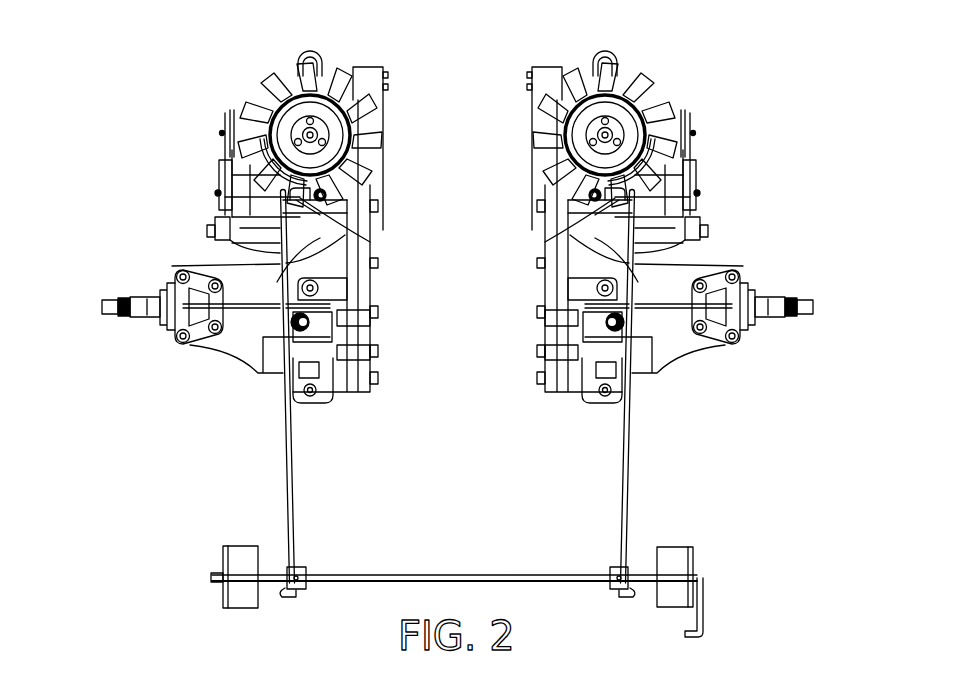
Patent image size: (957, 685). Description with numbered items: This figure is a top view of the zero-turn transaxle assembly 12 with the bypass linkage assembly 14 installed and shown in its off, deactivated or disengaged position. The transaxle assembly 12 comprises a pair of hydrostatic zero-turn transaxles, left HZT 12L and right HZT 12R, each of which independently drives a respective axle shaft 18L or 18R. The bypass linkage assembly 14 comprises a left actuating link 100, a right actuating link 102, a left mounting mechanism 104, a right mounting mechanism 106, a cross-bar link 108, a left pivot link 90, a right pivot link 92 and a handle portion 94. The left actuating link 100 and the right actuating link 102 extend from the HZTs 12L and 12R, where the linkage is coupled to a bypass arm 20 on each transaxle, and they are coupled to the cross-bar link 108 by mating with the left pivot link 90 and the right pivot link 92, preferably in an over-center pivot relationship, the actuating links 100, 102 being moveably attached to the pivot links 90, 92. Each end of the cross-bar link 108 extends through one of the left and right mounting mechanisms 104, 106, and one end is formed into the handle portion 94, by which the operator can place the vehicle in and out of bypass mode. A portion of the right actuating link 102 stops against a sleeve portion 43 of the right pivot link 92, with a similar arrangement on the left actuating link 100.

The zero-turn transaxle assembly 12 is at (459, 223).
The left HZT 12L is at (207, 223).
The right HZT 12R is at (709, 223).
The bypass linkage assembly 14 is at (458, 432).
The left axle shaft 18L is at (108, 313).
The right axle shaft 18R is at (808, 313).
The bypass arm 20 is at (379, 243).
The sleeve portion 43 is at (612, 590).
The left pivot link 90 is at (287, 568).
The right pivot link 92 is at (628, 568).
The handle portion 94 is at (705, 622).
The left actuating link 100 is at (287, 425).
The right actuating link 102 is at (628, 425).
The left mounting mechanism 104 is at (223, 556).
The right mounting mechanism 106 is at (693, 556).
The cross-bar link 108 is at (440, 575).